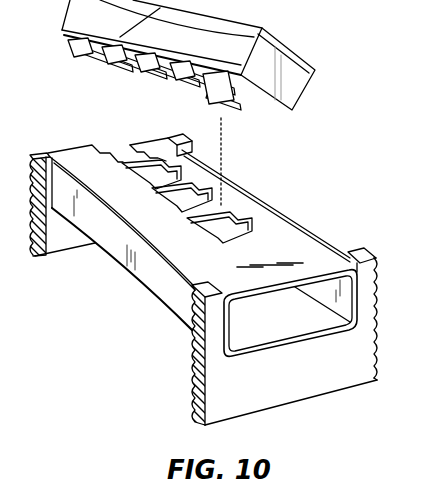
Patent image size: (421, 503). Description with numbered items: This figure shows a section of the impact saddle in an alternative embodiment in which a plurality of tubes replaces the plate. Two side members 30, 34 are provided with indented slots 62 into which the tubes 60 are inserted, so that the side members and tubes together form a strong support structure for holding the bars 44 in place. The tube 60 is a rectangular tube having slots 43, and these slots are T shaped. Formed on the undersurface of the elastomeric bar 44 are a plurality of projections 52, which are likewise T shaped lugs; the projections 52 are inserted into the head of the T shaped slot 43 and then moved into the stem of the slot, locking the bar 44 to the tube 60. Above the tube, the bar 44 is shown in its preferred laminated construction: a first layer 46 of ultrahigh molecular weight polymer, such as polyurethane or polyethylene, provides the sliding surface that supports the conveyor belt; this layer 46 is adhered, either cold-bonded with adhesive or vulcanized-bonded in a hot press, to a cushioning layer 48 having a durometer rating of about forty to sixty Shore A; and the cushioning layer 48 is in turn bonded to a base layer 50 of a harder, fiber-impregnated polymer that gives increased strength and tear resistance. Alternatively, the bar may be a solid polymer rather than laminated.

The side member 30 is at (202, 275).
The side member 34 is at (202, 275).
The slots 43 is at (193, 199).
The bar 44 is at (208, 73).
The first layer 46 is at (313, 68).
The cushioning layer 48 is at (297, 88).
The base layer 50 is at (294, 106).
The projections 52 is at (214, 105).
The tube 60 is at (301, 324).
The indented slots 62 is at (192, 363).